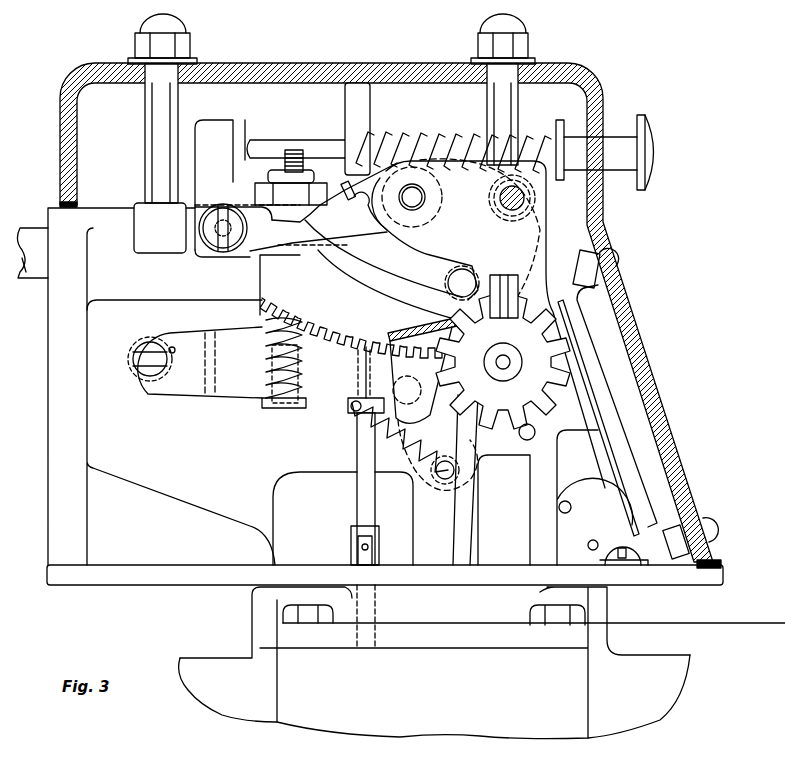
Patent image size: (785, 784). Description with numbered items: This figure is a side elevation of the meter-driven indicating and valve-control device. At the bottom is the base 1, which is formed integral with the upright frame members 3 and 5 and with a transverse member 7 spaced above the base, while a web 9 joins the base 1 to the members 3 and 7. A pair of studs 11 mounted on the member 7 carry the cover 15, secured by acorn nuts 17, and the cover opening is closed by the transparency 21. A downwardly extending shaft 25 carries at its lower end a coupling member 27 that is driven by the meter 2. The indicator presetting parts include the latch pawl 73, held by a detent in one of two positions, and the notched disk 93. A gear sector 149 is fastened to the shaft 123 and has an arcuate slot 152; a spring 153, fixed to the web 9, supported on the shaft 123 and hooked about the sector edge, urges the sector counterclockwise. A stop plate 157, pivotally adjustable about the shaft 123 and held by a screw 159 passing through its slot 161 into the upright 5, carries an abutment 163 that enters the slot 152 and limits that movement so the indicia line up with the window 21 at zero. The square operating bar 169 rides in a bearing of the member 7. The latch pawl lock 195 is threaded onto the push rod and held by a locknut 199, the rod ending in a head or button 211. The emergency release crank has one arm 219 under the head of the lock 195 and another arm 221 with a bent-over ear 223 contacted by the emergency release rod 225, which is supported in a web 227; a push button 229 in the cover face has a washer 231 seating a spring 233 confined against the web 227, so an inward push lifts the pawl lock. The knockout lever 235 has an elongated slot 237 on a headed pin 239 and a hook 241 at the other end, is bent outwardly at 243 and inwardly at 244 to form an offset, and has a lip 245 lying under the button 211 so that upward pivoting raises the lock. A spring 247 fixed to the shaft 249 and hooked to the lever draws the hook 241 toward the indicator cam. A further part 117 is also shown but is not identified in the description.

The base 1 is at (192, 585).
The meter 2 is at (356, 703).
The upright frame member 3 is at (80, 440).
The upright frame member 5 is at (472, 500).
The transverse member 7 is at (212, 296).
The web 9 is at (203, 451).
The studs 11 is at (145, 101).
The cover 15 is at (215, 68).
The acorn nuts 17 is at (172, 28).
The transparency 21 is at (650, 468).
The shaft 25 is at (357, 493).
The coupling member 27 is at (352, 546).
The latch pawl 73 is at (492, 319).
The disk 93 is at (514, 392).
The cam 117 is at (562, 478).
The shaft 123 is at (425, 195).
The gear sector 149 is at (400, 330).
The arcuate slot 152 is at (350, 300).
The spring 153 is at (349, 200).
The stop plate 157 is at (410, 252).
The screw 159 is at (500, 209).
The slot 161 is at (495, 199).
The abutment 163 is at (466, 280).
The operating bar 169 is at (30, 274).
The latch pawl lock 195 is at (268, 184).
The locknut 199 is at (306, 172).
The button or head 211 is at (285, 410).
The arm 219 is at (256, 255).
The arm 221 is at (203, 122).
The bent over ear 223 is at (245, 122).
The emergency release rod 225 is at (280, 150).
The web 227 is at (366, 110).
The push button 229 is at (656, 150).
The washer 231 is at (562, 130).
The spring 233 is at (422, 135).
The knockout lever 235 is at (262, 400).
The elongated slot 237 is at (172, 346).
The headed pin 239 is at (140, 342).
The hook 241 is at (435, 410).
The outward bend 243 is at (208, 362).
The inward bend 244 is at (358, 372).
The lip 245 is at (340, 410).
The spring 247 is at (418, 478).
The shaft 249 is at (452, 470).